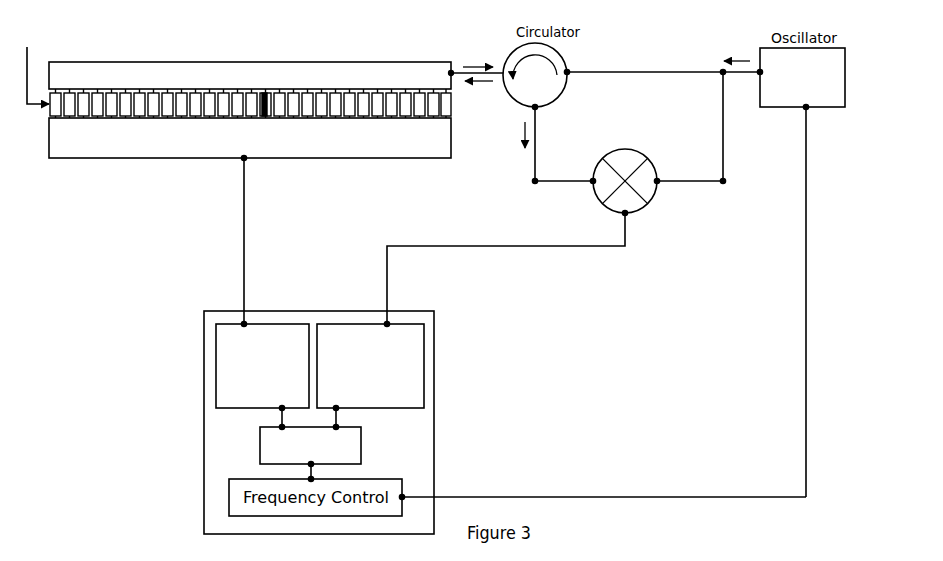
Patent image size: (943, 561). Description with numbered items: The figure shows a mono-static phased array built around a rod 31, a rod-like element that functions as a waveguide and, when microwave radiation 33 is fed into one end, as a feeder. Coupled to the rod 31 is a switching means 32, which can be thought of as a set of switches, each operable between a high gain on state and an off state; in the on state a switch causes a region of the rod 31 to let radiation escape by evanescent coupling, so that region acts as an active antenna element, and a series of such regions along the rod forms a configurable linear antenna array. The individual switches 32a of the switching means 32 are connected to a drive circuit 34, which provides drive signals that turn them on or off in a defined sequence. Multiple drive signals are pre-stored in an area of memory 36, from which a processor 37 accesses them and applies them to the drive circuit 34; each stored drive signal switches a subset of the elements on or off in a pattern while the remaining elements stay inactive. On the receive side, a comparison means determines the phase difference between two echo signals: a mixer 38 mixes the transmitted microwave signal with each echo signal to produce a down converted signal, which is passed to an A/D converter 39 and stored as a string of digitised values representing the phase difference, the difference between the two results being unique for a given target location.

The rod 31 is at (251, 72).
The switching means 32 is at (36, 64).
The individual switch 32a is at (150, 100).
The microwave radiation 33 is at (476, 64).
The drive circuit 34 is at (235, 135).
The memory 36 is at (216, 374).
The processor 37 is at (260, 447).
The mixer 38 is at (640, 155).
The A/D converter 39 is at (424, 338).